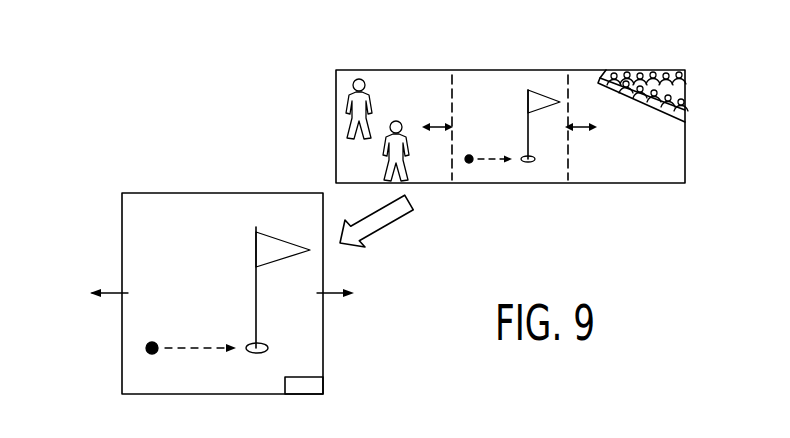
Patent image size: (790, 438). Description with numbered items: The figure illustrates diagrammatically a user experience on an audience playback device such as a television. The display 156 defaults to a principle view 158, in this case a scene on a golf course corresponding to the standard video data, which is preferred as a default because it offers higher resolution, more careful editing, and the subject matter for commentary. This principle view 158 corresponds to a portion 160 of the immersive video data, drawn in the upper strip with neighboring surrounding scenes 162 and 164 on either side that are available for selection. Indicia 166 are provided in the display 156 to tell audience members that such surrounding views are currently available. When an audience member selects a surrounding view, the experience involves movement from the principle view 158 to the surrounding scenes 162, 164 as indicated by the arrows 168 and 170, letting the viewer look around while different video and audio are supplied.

The display 156 is at (118, 36).
The principle view 158 is at (138, 327).
The portion of IV data 160 is at (512, 70).
The surrounding scene 162 is at (397, 69).
The surrounding scene 164 is at (630, 70).
The indicia 166 is at (303, 387).
The arrow 168 is at (103, 292).
The arrow 170 is at (340, 298).